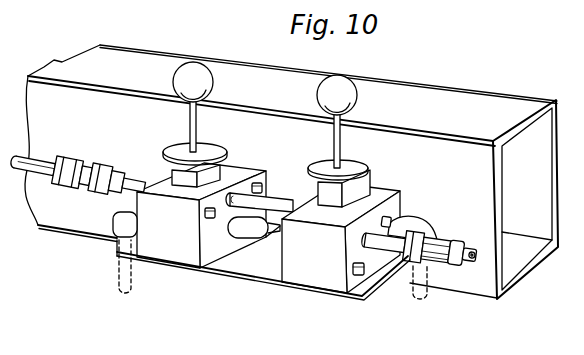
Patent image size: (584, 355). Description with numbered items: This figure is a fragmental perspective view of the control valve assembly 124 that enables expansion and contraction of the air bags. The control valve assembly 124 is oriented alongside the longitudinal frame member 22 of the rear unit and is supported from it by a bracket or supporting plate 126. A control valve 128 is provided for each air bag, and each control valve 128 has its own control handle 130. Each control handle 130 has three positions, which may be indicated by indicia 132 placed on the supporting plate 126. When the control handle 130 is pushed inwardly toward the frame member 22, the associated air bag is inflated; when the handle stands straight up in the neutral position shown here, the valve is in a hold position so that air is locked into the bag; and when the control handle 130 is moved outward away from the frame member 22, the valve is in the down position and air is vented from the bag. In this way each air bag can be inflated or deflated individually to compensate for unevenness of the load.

The longitudinal frame member 22 is at (487, 98).
The control valve assembly 124 is at (364, 195).
The supporting plate 126 is at (273, 272).
The control valve 128 is at (182, 242).
The control handle 130 is at (193, 66).
The indicia 132 is at (217, 272).